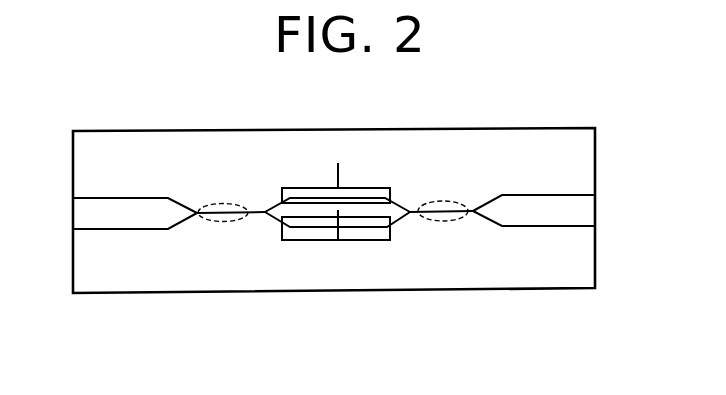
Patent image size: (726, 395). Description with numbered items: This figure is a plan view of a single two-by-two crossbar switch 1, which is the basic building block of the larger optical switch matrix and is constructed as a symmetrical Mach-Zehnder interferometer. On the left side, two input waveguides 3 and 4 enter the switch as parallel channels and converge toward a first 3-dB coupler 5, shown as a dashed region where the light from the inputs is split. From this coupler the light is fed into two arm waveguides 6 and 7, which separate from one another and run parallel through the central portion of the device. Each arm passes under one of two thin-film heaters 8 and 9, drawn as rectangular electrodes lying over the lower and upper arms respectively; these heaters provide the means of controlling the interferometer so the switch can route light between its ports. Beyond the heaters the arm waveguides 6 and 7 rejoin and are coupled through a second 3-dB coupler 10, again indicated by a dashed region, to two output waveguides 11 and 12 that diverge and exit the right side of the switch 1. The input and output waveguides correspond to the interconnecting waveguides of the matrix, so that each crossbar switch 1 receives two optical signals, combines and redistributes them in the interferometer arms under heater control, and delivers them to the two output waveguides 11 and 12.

The 2×2 crossbar switch 1 is at (632, 185).
The input waveguide 3 is at (128, 231).
The input waveguide 4 is at (113, 197).
The first 3-dB coupler 5 is at (203, 222).
The arm waveguide 6 is at (276, 222).
The arm waveguide 7 is at (274, 204).
The thin-film heater 8 is at (392, 240).
The thin-film heater 9 is at (362, 188).
The second 3-dB coupler 10 is at (447, 201).
The output waveguide 11 is at (529, 228).
The output waveguide 12 is at (550, 194).